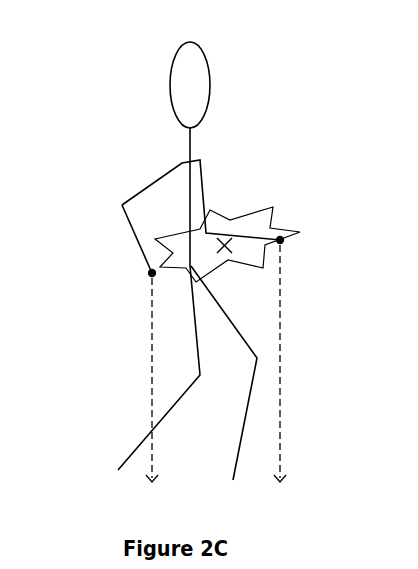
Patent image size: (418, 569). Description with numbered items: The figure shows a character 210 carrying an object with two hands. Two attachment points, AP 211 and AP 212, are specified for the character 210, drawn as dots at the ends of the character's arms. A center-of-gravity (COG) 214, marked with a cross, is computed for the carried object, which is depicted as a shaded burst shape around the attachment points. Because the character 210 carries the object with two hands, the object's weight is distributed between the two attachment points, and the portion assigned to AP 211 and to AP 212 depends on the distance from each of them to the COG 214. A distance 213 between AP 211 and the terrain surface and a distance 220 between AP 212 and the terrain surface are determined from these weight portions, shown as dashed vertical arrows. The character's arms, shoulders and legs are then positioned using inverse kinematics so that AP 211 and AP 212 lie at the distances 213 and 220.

The character 210 is at (208, 70).
The center-of-gravity (COG) 214 is at (224, 238).
The attachment point (AP) 211 is at (148, 273).
The attachment point (AP) 212 is at (283, 243).
The distance 213 is at (150, 377).
The distance 220 is at (281, 403).